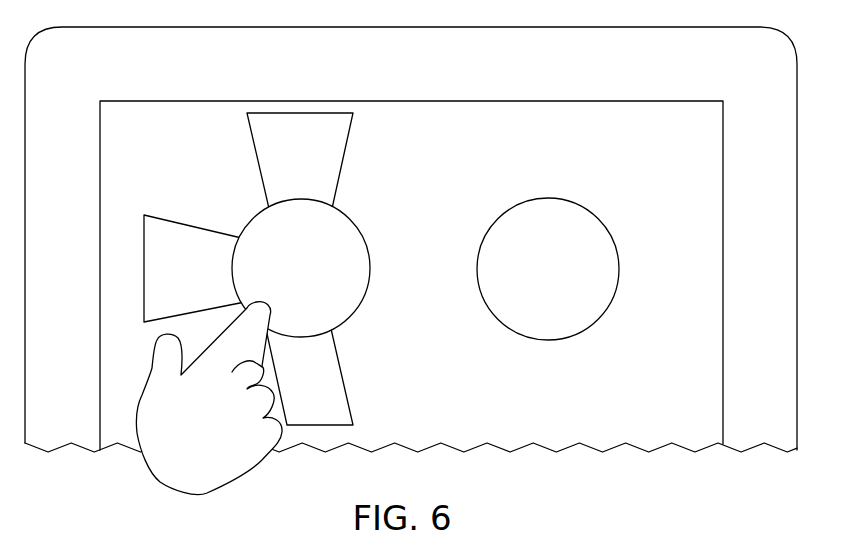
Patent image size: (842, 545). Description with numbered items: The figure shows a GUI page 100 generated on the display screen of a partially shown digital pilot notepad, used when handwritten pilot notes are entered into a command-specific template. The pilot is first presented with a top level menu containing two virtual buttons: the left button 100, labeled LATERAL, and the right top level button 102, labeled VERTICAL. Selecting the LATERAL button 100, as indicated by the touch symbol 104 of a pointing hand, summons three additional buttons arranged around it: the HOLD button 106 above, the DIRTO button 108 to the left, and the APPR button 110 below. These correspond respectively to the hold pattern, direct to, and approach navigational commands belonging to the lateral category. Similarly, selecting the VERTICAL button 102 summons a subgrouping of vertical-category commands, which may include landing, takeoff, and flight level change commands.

The GUI page / LATERAL button 100 is at (282, 309).
The VERTICAL button 102 is at (529, 309).
The touch symbol 104 is at (243, 475).
The HOLD button 106 is at (345, 163).
The DIRTO button 108 is at (182, 224).
The APPR button 110 is at (344, 387).